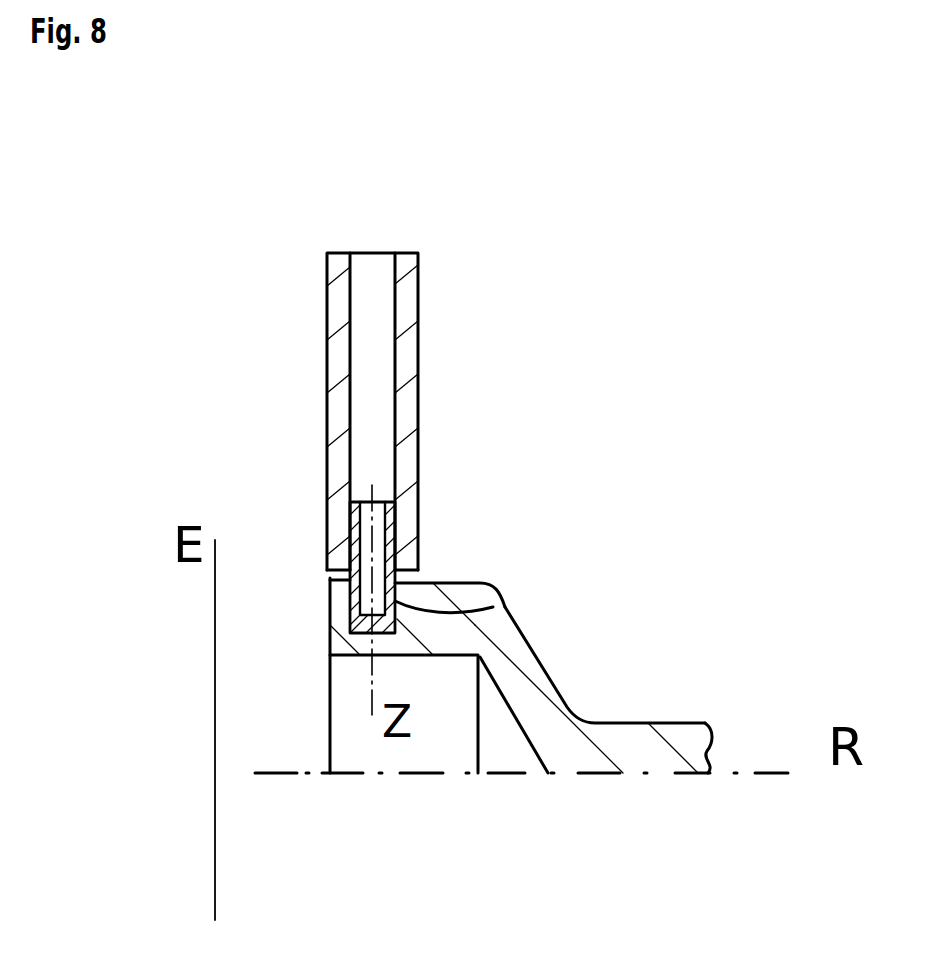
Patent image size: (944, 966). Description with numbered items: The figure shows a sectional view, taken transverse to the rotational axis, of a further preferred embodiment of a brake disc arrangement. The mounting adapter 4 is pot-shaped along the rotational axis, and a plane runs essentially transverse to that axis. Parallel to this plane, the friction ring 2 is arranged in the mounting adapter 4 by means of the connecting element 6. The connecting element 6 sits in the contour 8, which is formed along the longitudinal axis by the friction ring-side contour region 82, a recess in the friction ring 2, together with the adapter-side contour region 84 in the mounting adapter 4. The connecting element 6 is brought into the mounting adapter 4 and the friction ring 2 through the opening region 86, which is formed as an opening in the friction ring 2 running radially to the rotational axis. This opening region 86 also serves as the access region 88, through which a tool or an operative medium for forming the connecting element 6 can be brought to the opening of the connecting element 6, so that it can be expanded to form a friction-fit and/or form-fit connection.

The friction ring 2 is at (405, 306).
The mounting adapter 4 is at (693, 735).
The connecting element 6 is at (396, 540).
The contour 8 is at (318, 580).
The friction ring-side contour region 82 is at (392, 505).
The adapter-side contour region 84 is at (493, 607).
The opening region 86 is at (381, 268).
The access region 88 is at (394, 302).